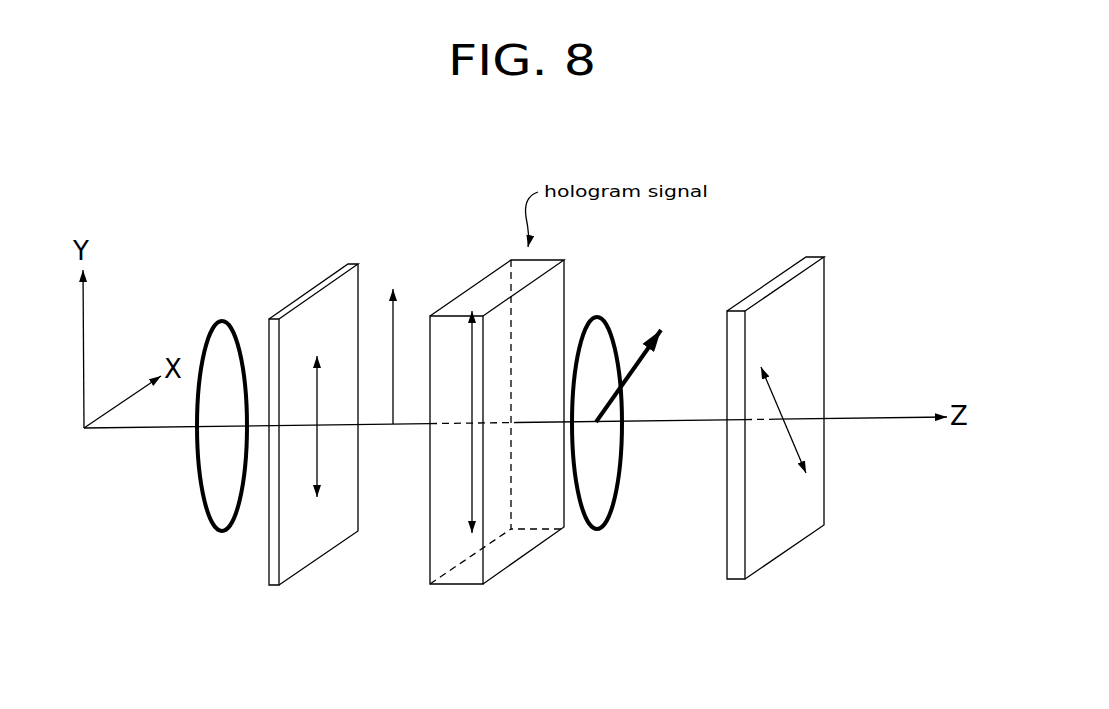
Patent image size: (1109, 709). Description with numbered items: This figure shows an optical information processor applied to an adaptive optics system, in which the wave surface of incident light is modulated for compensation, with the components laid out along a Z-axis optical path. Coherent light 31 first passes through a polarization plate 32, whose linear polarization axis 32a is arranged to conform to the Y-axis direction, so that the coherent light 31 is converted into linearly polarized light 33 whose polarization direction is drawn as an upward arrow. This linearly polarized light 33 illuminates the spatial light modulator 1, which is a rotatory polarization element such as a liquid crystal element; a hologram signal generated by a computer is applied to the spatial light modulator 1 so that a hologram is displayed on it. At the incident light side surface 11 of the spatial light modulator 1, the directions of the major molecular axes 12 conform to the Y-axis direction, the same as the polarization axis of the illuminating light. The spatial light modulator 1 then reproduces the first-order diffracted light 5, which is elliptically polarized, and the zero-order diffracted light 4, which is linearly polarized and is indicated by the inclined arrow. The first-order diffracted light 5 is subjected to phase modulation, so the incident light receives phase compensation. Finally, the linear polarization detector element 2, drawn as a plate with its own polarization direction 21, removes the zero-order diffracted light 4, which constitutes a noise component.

The spatial light modulator 1 is at (548, 297).
The incident light side surface 11 is at (440, 450).
The major molecular axes 12 is at (470, 495).
The linear polarization detector element 2 is at (808, 300).
The polarization direction of plate 2 21 is at (788, 443).
The coherent light 31 is at (221, 316).
The polarization plate 32 is at (274, 394).
The linear polarization axis 32a is at (315, 472).
The linearly polarized light 33 is at (402, 308).
The zero-order diffracted light 4 is at (645, 364).
The first-order diffracted light 5 is at (627, 486).